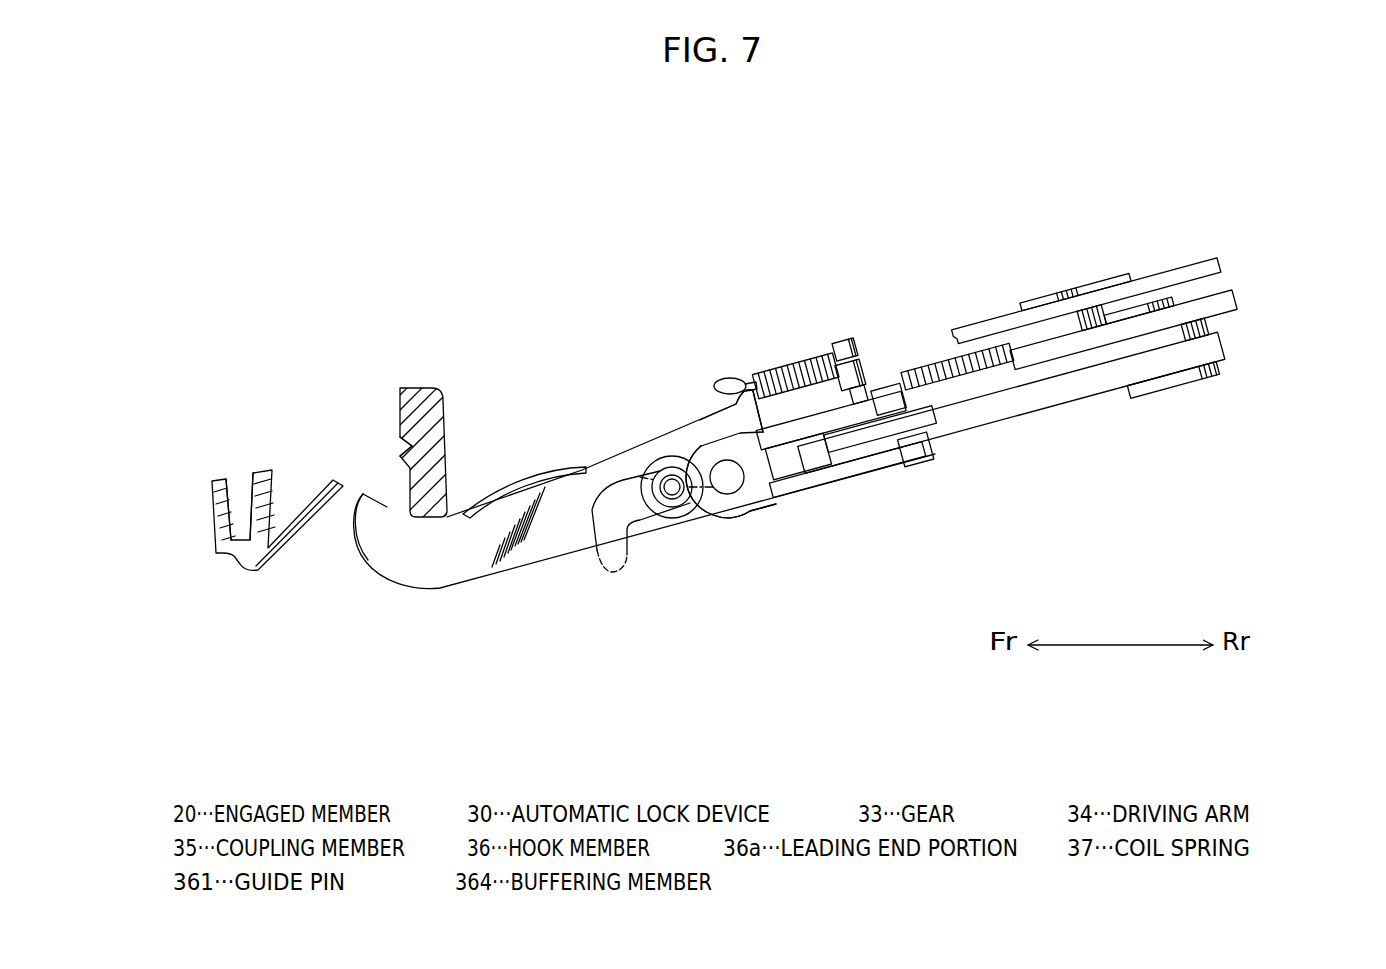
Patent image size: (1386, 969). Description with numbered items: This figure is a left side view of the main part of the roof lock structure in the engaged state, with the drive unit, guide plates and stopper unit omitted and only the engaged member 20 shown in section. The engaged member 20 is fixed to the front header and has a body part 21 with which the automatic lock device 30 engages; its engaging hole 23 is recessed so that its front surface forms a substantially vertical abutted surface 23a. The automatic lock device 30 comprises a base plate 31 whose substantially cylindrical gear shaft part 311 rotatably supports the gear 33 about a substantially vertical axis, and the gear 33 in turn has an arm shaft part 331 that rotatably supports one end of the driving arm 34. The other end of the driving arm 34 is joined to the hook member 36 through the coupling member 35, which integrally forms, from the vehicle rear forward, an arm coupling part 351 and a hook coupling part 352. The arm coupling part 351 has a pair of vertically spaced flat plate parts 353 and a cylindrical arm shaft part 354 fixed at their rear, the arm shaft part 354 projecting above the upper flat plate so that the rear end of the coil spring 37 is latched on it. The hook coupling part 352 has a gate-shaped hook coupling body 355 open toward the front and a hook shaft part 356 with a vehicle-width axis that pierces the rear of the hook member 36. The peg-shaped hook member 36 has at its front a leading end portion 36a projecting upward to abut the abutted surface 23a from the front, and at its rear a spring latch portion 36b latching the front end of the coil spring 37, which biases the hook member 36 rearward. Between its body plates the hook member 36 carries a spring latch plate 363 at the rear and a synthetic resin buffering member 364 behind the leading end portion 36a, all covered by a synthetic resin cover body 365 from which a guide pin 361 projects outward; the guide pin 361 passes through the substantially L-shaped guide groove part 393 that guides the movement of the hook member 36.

The engaged member 20 is at (279, 395).
The body part 21 is at (262, 563).
The engaging hole 23 is at (380, 468).
The abutted surface 23a is at (430, 448).
The automatic lock device 30 is at (997, 206).
The base plate 31 is at (1160, 272).
The gear shaft part 311 is at (1060, 296).
The gear 33 is at (1243, 298).
The arm shaft part 331 is at (1178, 381).
The driving arm 34 is at (1027, 416).
The coupling member 35 is at (818, 496).
The arm coupling part 351 is at (899, 458).
The hook coupling part 352 is at (815, 584).
The flat plate parts 353 is at (886, 393).
The arm shaft part 354 is at (848, 340).
The hook coupling body 355 is at (752, 494).
The hook shaft part 356 is at (727, 480).
The hook member 36 is at (433, 594).
The leading end portion 36a is at (380, 505).
The spring latch portion 36b is at (731, 382).
The guide pin 361 is at (672, 490).
The spring latch plate 363 is at (698, 420).
The buffering member 364 is at (510, 470).
The cover body 365 is at (548, 551).
The coil spring 37 is at (787, 360).
The guide groove part 393 is at (611, 566).